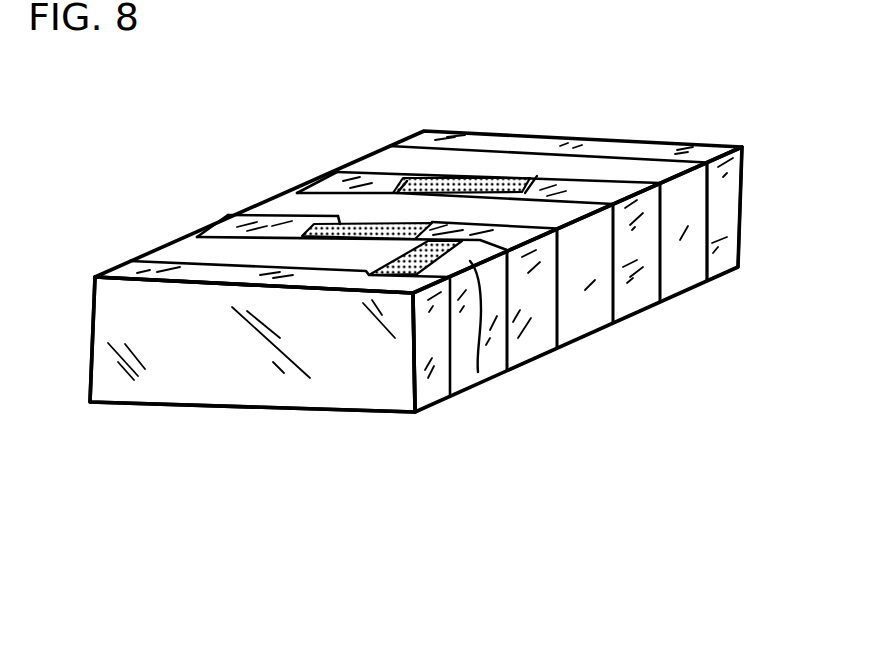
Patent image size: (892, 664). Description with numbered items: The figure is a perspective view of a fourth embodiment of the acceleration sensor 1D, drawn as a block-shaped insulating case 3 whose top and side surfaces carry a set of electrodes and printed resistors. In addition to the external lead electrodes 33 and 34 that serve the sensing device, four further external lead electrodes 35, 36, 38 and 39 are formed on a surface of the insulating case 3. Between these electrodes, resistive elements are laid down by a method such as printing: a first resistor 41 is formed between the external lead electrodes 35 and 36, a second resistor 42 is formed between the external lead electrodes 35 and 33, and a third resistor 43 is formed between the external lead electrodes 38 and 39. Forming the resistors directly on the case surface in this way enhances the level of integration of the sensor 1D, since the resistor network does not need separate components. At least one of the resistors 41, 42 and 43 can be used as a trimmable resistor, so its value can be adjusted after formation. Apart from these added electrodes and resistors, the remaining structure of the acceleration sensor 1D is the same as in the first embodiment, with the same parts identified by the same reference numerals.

The acceleration sensor 1D is at (678, 126).
The insulating case 3 is at (573, 150).
The external lead electrode 33 is at (233, 388).
The external lead electrode 34 is at (733, 216).
The external lead electrode 35 is at (540, 343).
The external lead electrode 36 is at (228, 228).
The external lead electrode 38 is at (637, 300).
The external lead electrode 39 is at (338, 173).
The first resistor 41 is at (328, 216).
The second resistor 42 is at (478, 372).
The third resistor 43 is at (477, 172).